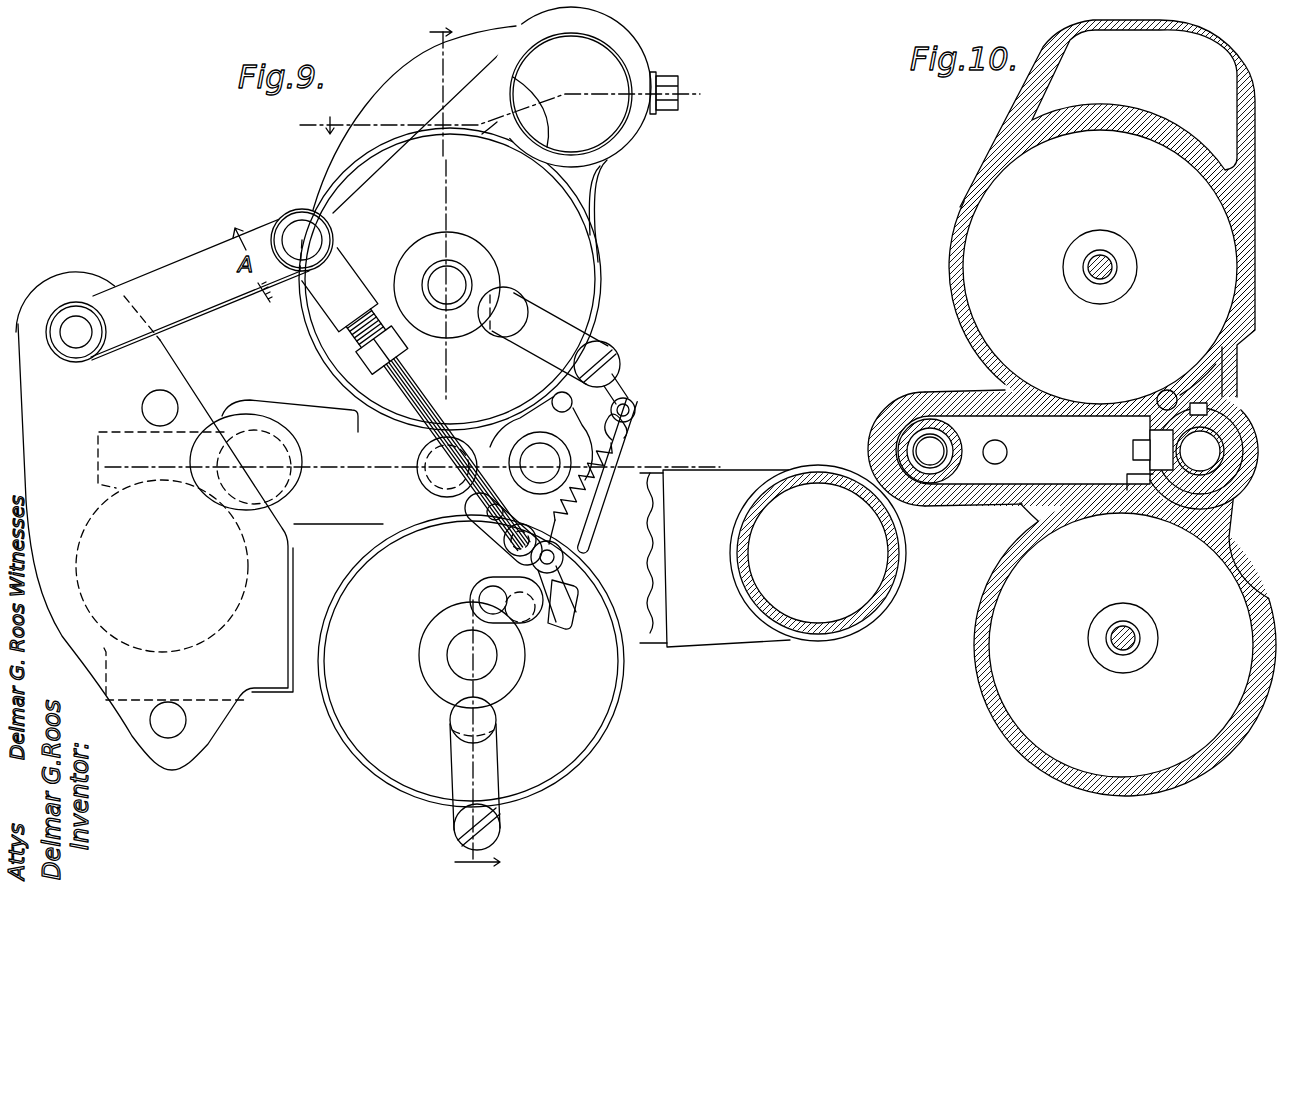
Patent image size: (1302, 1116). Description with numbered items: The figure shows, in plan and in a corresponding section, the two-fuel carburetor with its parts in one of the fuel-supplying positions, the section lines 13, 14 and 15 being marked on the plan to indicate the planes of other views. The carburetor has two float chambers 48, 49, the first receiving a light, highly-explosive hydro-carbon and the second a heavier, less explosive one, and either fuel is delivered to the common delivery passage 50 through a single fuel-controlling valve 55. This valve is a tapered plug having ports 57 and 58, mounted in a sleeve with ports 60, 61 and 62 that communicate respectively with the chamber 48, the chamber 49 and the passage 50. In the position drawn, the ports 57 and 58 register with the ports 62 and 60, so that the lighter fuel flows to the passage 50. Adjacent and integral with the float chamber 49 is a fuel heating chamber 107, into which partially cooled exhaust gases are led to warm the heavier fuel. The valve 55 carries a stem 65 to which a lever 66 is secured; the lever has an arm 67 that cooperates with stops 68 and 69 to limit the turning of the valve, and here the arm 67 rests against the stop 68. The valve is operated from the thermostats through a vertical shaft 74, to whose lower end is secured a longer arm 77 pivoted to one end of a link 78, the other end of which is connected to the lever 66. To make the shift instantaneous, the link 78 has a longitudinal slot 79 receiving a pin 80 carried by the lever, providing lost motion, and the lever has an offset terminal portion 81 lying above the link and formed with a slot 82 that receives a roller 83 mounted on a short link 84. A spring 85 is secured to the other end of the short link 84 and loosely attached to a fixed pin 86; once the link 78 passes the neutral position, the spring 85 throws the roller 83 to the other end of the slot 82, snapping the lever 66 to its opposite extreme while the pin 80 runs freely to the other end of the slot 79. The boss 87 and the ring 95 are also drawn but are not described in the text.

In FIG. 9, the section line 13- 13 is at (443, 447).
In FIG. 9, the section line 14- 14 is at (412, 460).
In FIG. 9, the section line 15- 15 is at (720, 94).
In FIG. 9, the float chamber 48 is at (580, 738).
In FIG. 10, the float chamber 48 is at (985, 650).
In FIG. 9, the float chamber 49 is at (590, 260).
In FIG. 10, the float chamber 49 is at (967, 236).
In FIG. 9, the common delivery passage 50 is at (343, 512).
In FIG. 10, the common delivery passage 50 is at (1006, 486).
In FIG. 10, the fuel-controlling valve 55 is at (1238, 404).
In FIG. 10, the port 57 is at (1160, 398).
In FIG. 10, the port 58 is at (1160, 490).
In FIG. 10, the port 60 is at (1202, 494).
In FIG. 10, the port 61 is at (1198, 403).
In FIG. 10, the port 62 is at (1133, 450).
In FIG. 9, the valve stem 65 is at (532, 440).
In FIG. 9, the lever 66 is at (505, 428).
In FIG. 9, the arm 67 is at (618, 360).
In FIG. 9, the stop 68 is at (552, 398).
In FIG. 9, the stop 69 is at (592, 528).
In FIG. 9, the vertical shaft 74 is at (76, 350).
In FIG. 9, the arm 77 is at (172, 278).
In FIG. 9, the link 78 is at (432, 398).
In FIG. 9, the longitudinal slot 79 is at (480, 526).
In FIG. 9, the pin 80 is at (504, 550).
In FIG. 9, the offset terminal portion 81 is at (566, 626).
In FIG. 9, the slot 82 is at (470, 594).
In FIG. 9, the roller 83 is at (524, 620).
In FIG. 9, the short link 84 is at (564, 562).
In FIG. 9, the spring 85 is at (590, 508).
In FIG. 9, the fixed pin 86 is at (638, 404).
In FIG. 9, the boss 87 is at (290, 450).
In FIG. 9, the ring 95 is at (826, 628).
In FIG. 10, the fuel heating chamber 107 is at (1223, 123).